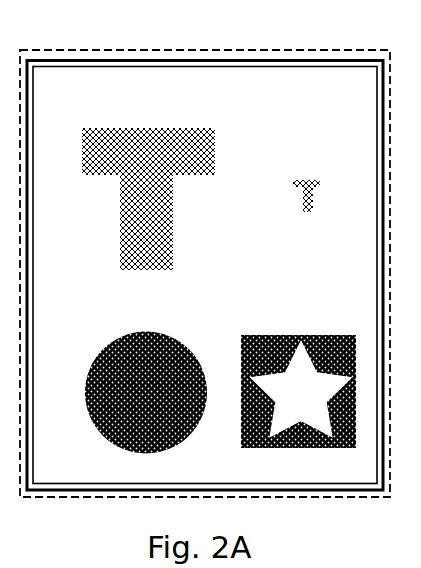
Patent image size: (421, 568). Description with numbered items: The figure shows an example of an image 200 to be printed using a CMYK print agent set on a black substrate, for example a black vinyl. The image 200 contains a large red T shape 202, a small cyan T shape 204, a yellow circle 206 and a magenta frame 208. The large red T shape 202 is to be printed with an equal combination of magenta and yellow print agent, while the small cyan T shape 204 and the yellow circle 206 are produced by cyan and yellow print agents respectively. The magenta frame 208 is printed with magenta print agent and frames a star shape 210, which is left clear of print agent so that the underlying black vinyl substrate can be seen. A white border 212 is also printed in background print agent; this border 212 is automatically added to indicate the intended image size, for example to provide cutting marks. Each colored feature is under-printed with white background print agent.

The image 200 is at (250, 50).
The white border 212 is at (133, 60).
The large red T shape 202 is at (178, 128).
The small cyan T shape 204 is at (299, 180).
The yellow circle 206 is at (149, 332).
The magenta frame 208 is at (265, 335).
The star shape 210 is at (322, 402).